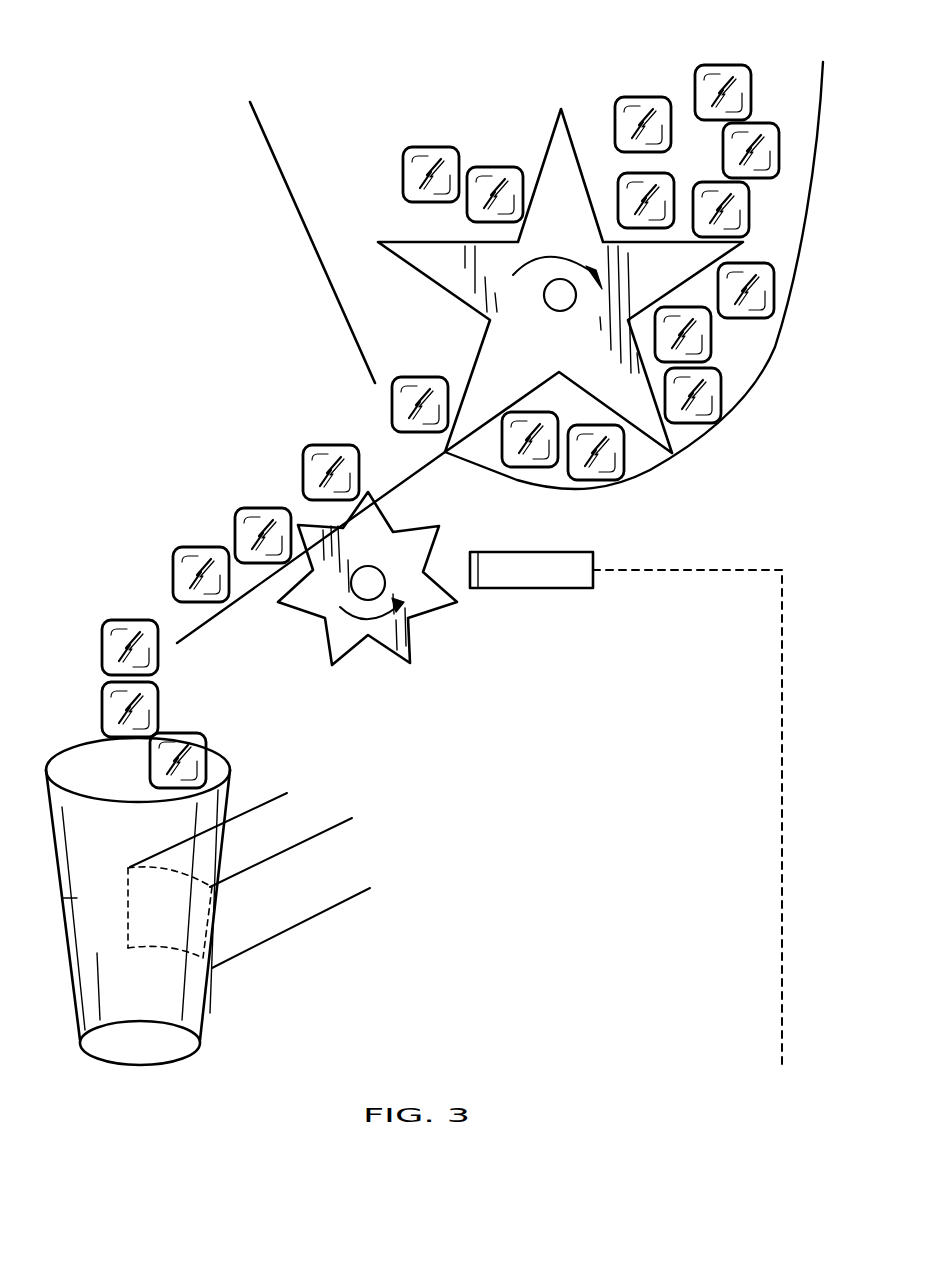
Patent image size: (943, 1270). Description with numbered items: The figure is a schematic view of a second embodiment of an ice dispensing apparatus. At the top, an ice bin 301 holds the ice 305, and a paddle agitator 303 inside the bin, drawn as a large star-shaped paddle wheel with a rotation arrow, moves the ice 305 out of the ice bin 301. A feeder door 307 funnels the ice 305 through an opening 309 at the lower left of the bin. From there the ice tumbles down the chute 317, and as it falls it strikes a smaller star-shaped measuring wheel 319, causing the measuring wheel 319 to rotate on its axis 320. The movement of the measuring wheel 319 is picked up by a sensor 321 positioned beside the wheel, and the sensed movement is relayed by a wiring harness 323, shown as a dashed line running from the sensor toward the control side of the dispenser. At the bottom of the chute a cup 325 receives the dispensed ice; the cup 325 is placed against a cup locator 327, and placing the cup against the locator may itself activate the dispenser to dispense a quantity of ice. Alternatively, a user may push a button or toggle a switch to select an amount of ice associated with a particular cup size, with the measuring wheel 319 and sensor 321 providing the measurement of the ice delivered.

The ice bin 301 is at (776, 347).
The paddle agitator 303 is at (430, 265).
The ice 305 is at (613, 472).
The feeder door 307 is at (375, 380).
The opening 309 is at (393, 438).
The chute 317 is at (213, 618).
The measuring wheel 319 is at (408, 648).
The axis 320 is at (378, 566).
The sensor 321 is at (557, 588).
The wiring harness 323 is at (782, 668).
The cup 325 is at (190, 1002).
The cup locator 327 is at (327, 913).